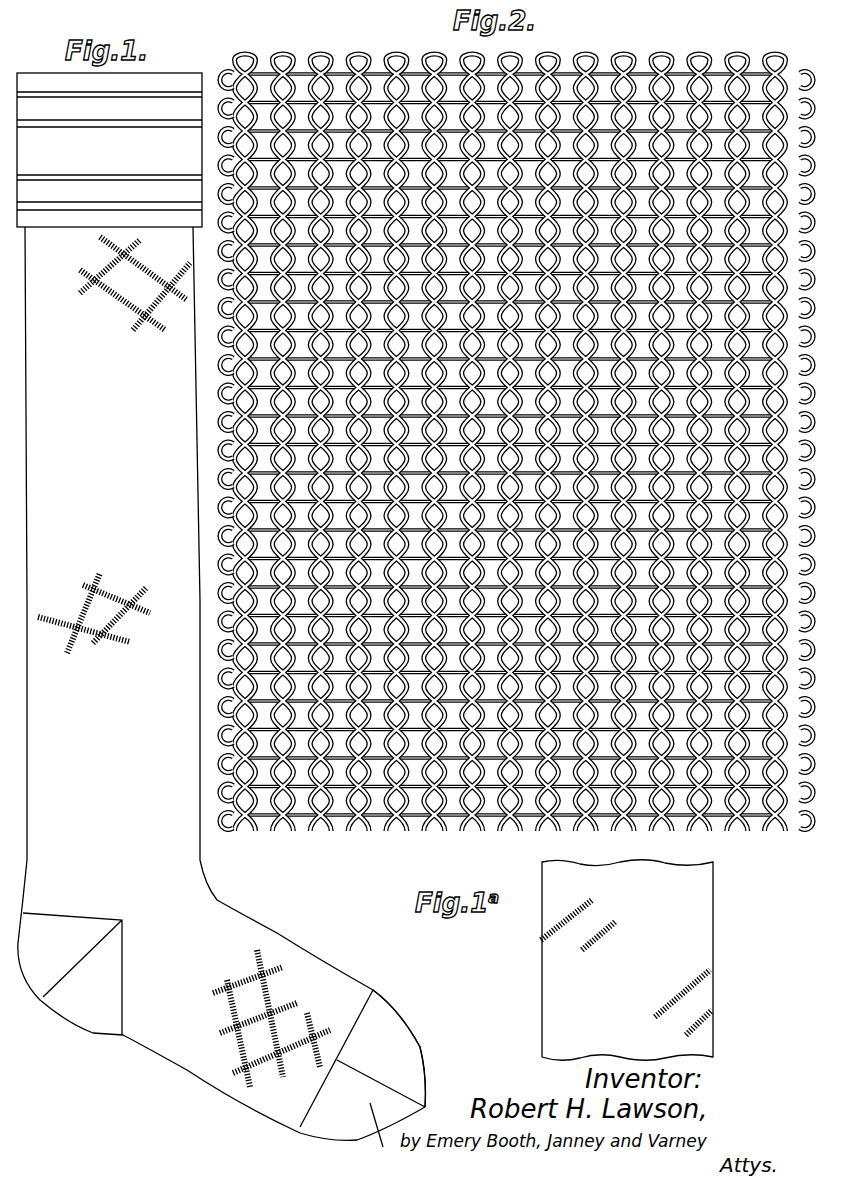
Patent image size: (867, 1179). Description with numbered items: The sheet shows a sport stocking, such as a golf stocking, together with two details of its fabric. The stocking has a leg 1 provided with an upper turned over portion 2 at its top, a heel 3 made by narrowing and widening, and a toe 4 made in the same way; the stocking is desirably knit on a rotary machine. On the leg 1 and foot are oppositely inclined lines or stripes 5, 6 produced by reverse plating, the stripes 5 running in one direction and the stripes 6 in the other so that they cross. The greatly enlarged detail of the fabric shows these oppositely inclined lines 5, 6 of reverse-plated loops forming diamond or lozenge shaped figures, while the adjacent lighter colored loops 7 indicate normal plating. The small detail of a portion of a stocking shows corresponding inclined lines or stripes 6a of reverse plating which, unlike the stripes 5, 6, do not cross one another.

In FIG. 1, the leg 1 is at (43, 435).
In FIG. 2, the leg 1 is at (500, 836).
In FIG. 1A, the leg 1 is at (555, 992).
In FIG. 1, the upper turned over portion 2 is at (109, 150).
In FIG. 1, the heel 3 is at (45, 987).
In FIG. 1, the toe 4 is at (403, 1037).
In FIG. 1, the inclined lines or stripes 5 is at (140, 262).
In FIG. 2, the inclined lines or stripes 5 is at (500, 44).
In FIG. 1, the oppositely inclined lines or stripes 6 is at (108, 262).
In FIG. 2, the oppositely inclined lines or stripes 6 is at (660, 44).
In FIG. 2, the lighter colored loops 7 is at (350, 44).
In FIG. 1A, the inclined lines or stripes 6a is at (572, 915).